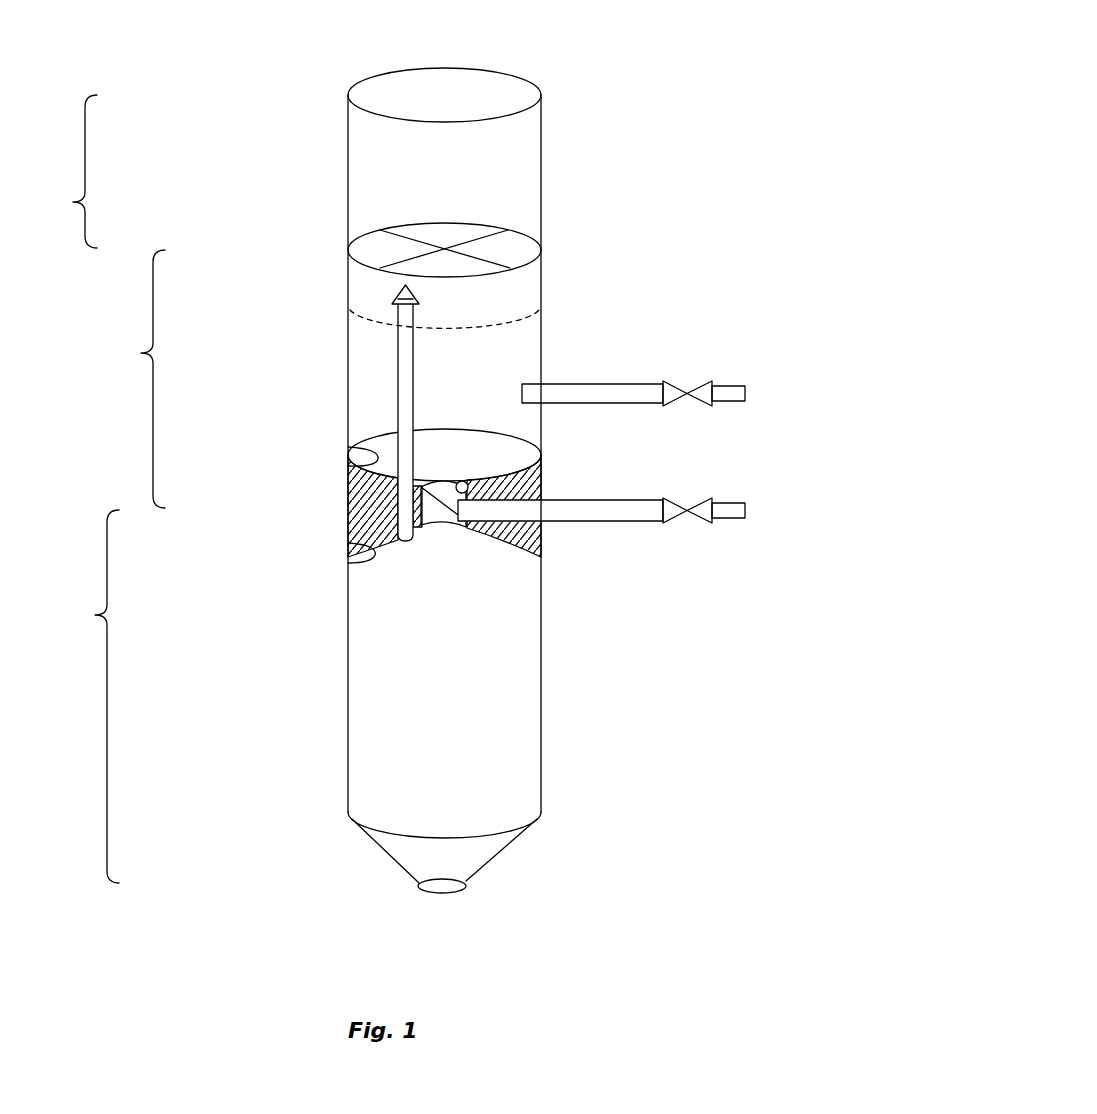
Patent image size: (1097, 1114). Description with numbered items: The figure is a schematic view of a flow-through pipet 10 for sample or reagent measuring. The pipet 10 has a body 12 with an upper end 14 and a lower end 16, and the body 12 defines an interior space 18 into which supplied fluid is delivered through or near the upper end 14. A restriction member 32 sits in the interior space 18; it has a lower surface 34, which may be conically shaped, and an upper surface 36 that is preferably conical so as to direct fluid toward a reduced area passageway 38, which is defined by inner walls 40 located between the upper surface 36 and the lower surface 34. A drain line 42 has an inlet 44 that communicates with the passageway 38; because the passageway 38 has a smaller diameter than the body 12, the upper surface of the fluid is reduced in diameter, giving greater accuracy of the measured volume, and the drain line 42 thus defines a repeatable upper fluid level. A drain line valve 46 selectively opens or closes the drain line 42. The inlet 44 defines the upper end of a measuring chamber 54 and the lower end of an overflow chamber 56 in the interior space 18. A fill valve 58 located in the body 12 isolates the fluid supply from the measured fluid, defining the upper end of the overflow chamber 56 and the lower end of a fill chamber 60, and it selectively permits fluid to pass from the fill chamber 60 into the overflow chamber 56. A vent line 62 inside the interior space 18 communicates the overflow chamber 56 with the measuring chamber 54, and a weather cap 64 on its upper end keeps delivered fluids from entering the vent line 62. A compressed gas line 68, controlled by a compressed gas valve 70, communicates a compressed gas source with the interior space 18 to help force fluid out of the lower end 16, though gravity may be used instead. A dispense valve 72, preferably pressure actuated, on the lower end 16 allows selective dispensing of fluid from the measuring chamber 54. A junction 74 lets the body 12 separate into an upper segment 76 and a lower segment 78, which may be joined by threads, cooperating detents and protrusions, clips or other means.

The pipet 10 is at (618, 128).
The body 12 is at (541, 698).
The upper end 14 is at (342, 80).
The lower end 16 is at (376, 868).
The interior space 18 is at (475, 647).
The restriction member 32 is at (370, 510).
The lower surface 34 is at (372, 553).
The upper surface 36 is at (358, 443).
The reduced area passageway 38 is at (446, 478).
The inner walls 40 is at (470, 485).
The drain line 42 is at (747, 512).
The inlet 44 is at (440, 512).
The drain line valve 46 is at (690, 517).
The measuring chamber 54 is at (87, 696).
The overflow chamber 56 is at (132, 379).
The fill valve 58 is at (472, 222).
The fill chamber 60 is at (66, 171).
The vent line 62 is at (403, 385).
The weather cap 64 is at (400, 292).
The compressed gas line 68 is at (610, 392).
The compressed gas valve 70 is at (690, 387).
The dispense valve 72 is at (440, 893).
The junction 74 is at (490, 330).
The upper segment 76 is at (548, 150).
The lower segment 78 is at (547, 742).